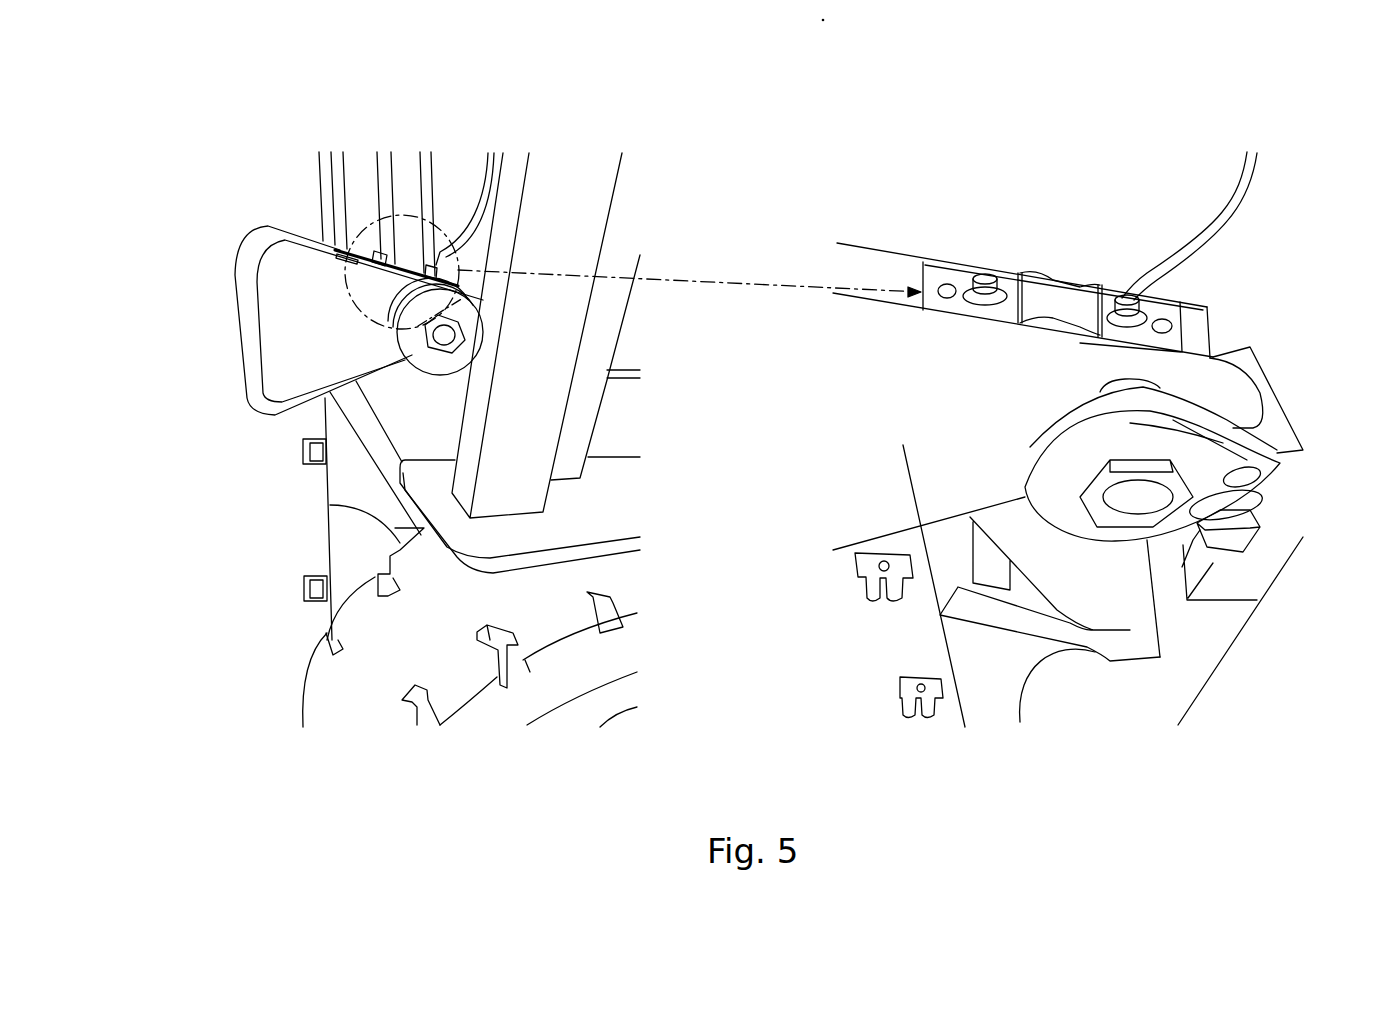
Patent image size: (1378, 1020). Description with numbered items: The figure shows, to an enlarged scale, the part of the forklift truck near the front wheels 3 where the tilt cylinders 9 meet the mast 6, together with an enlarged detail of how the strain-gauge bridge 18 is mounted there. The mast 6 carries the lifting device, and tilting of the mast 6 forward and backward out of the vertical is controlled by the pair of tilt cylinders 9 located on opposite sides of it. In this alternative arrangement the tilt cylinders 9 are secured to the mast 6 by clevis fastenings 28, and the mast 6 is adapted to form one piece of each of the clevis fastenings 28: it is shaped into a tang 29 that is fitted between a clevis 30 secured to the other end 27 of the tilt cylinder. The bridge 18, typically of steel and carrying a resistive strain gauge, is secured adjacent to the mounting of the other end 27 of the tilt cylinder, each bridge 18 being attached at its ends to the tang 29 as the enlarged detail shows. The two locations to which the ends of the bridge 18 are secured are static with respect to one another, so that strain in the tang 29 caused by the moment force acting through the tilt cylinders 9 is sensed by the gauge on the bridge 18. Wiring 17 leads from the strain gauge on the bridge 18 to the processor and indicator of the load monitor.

The front wheels 3 is at (423, 647).
The mast 6 is at (300, 307).
The tilt cylinders 9 is at (1313, 392).
The wiring 17 is at (1203, 230).
The bridge 18 is at (1062, 295).
The other end of the tilt cylinder 27 is at (430, 362).
The clevis fastenings 28 is at (463, 364).
The tang 29 is at (1248, 472).
The clevis 30 is at (1058, 512).